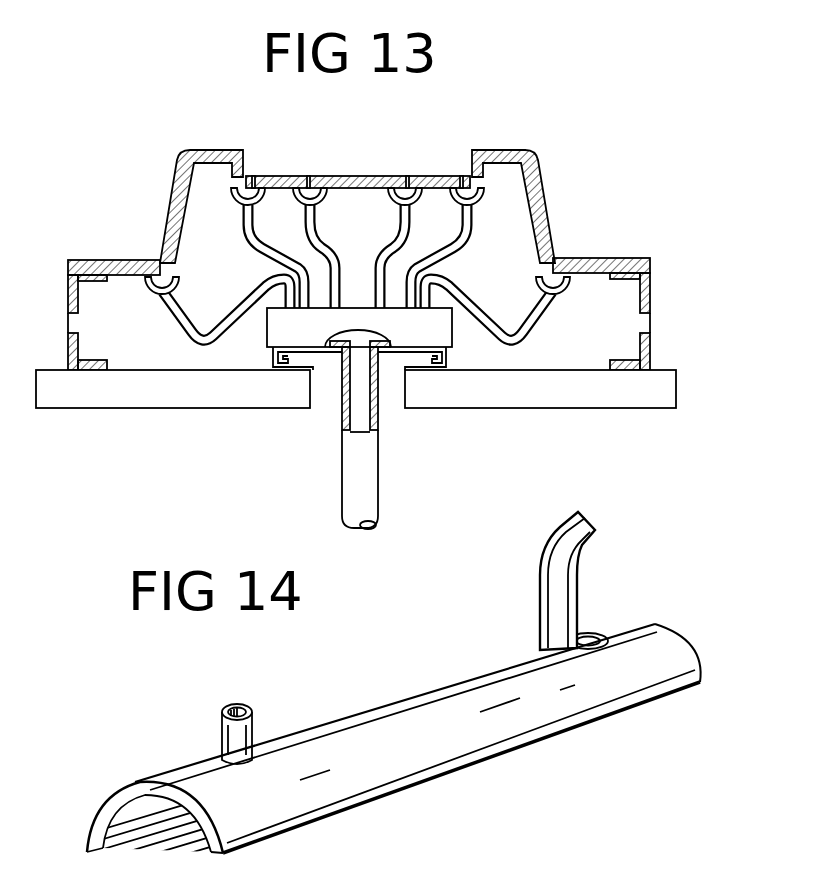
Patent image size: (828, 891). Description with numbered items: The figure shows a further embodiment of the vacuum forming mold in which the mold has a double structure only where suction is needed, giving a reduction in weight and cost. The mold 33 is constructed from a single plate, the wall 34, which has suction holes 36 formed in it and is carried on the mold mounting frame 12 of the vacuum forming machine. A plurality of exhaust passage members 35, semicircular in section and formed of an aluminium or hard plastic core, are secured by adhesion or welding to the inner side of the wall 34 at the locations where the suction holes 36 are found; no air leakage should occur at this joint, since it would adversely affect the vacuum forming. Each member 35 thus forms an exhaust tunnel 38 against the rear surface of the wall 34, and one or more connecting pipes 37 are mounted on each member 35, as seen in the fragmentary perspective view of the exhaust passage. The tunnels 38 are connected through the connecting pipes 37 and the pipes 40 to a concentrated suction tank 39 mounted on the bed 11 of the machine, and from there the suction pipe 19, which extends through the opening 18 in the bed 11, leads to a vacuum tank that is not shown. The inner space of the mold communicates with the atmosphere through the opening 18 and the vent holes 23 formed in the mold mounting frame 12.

In FIG. 13, the bed 11 is at (133, 392).
In FIG. 13, the mold mounting frame 12 is at (652, 354).
In FIG. 13, the opening 18 is at (395, 392).
In FIG. 13, the suction pipe 19 is at (353, 485).
In FIG. 13, the vent holes 23 is at (652, 320).
In FIG. 13, the mold 33 is at (548, 180).
In FIG. 13, the wall 34 is at (505, 150).
In FIG. 13, the exhaust passage members 35 is at (362, 186).
In FIG. 14, the exhaust passage members 35 is at (428, 720).
In FIG. 13, the suction holes 36 is at (297, 180).
In FIG. 14, the connecting pipes 37 is at (253, 700).
In FIG. 13, the tunnels 38 is at (327, 180).
In FIG. 13, the concentrated suction tank 39 is at (305, 333).
In FIG. 13, the pipes 40 is at (243, 313).
In FIG. 14, the pipes 40 is at (563, 547).